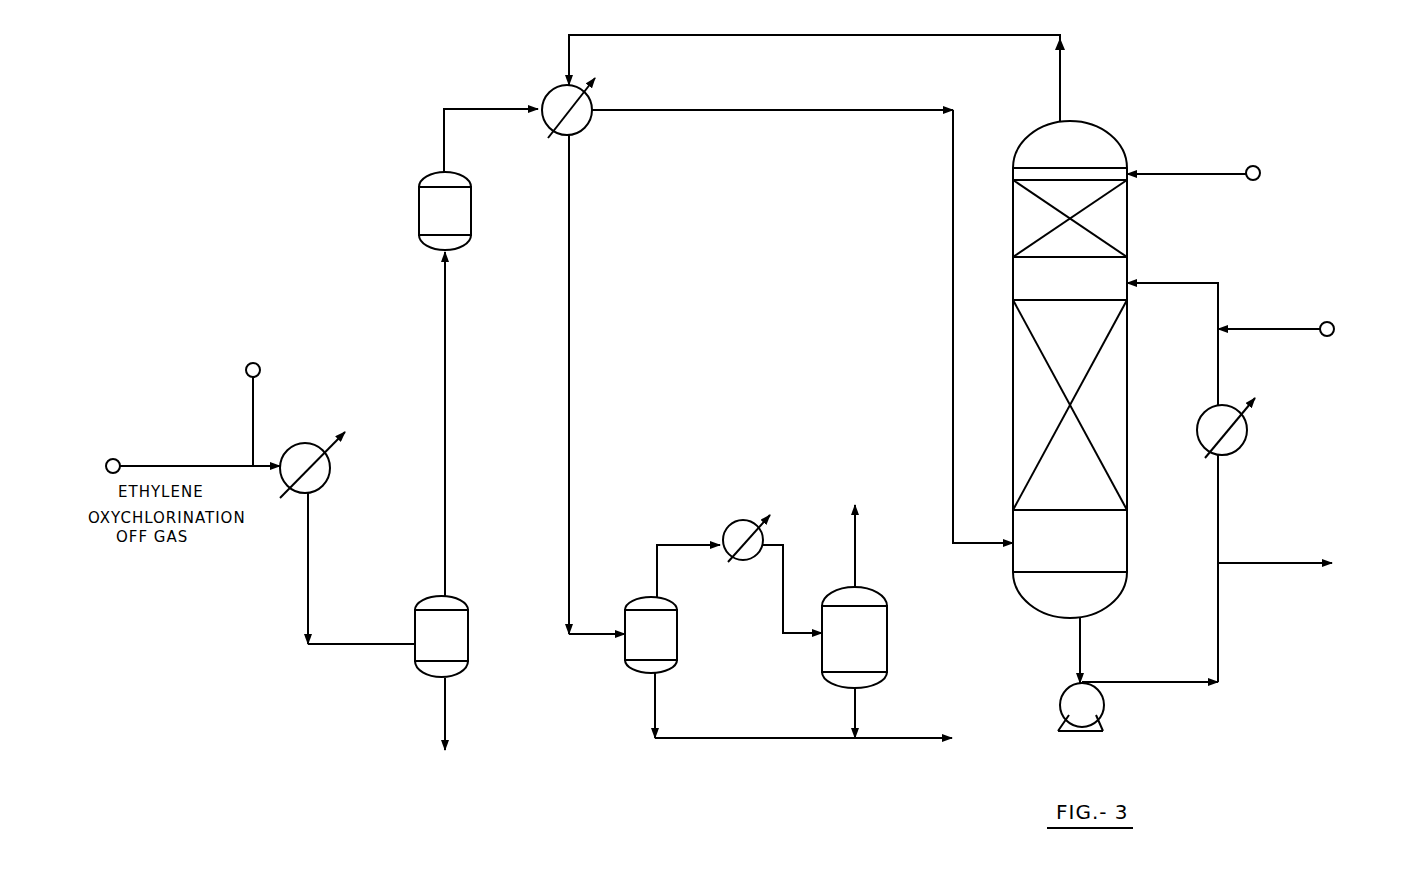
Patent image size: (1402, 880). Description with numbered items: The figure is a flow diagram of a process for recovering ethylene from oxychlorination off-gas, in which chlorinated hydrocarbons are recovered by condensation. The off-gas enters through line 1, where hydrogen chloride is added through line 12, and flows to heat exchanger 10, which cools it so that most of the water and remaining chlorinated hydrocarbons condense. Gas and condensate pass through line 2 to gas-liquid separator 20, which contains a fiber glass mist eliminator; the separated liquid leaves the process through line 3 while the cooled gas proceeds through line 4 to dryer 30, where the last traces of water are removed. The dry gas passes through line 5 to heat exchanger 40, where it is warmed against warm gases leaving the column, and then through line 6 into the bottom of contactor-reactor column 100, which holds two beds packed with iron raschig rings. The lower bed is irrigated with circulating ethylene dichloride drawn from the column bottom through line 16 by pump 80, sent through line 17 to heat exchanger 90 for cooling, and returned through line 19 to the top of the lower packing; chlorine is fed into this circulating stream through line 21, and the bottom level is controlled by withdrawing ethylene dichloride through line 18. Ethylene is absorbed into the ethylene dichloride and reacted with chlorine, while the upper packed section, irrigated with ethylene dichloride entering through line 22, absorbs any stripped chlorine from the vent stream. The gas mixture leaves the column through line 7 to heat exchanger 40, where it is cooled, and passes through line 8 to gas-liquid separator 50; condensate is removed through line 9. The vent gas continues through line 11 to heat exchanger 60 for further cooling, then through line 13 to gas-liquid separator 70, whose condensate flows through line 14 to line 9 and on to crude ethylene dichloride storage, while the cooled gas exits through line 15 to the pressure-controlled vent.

The line 1 is at (194, 466).
The line 2 is at (309, 548).
The line 3 is at (447, 693).
The line 4 is at (447, 382).
The line 5 is at (443, 142).
The line 6 is at (735, 111).
The line 7 is at (752, 37).
The line 8 is at (571, 388).
The line 9 is at (654, 704).
The heat exchanger 10 is at (308, 467).
The line 11 is at (659, 551).
The line 12 is at (254, 384).
The line 13 is at (782, 596).
The line 14 is at (854, 709).
The line 15 is at (857, 527).
The line 16 is at (1082, 660).
The line 17 is at (1220, 470).
The line 18 is at (1282, 562).
The line 19 is at (1216, 381).
The gas-liquid separator 20 is at (454, 644).
The line 21 is at (1287, 329).
The line 22 is at (1204, 173).
The dryer 30 is at (456, 220).
The heat exchanger 40 is at (570, 110).
The gas-liquid separator 50 is at (662, 643).
The heat exchanger 60 is at (750, 543).
The gas-liquid separator 70 is at (866, 646).
The pump 80 is at (1093, 714).
The heat exchanger 90 is at (1226, 431).
The contactor-reactor column 100 is at (1078, 290).